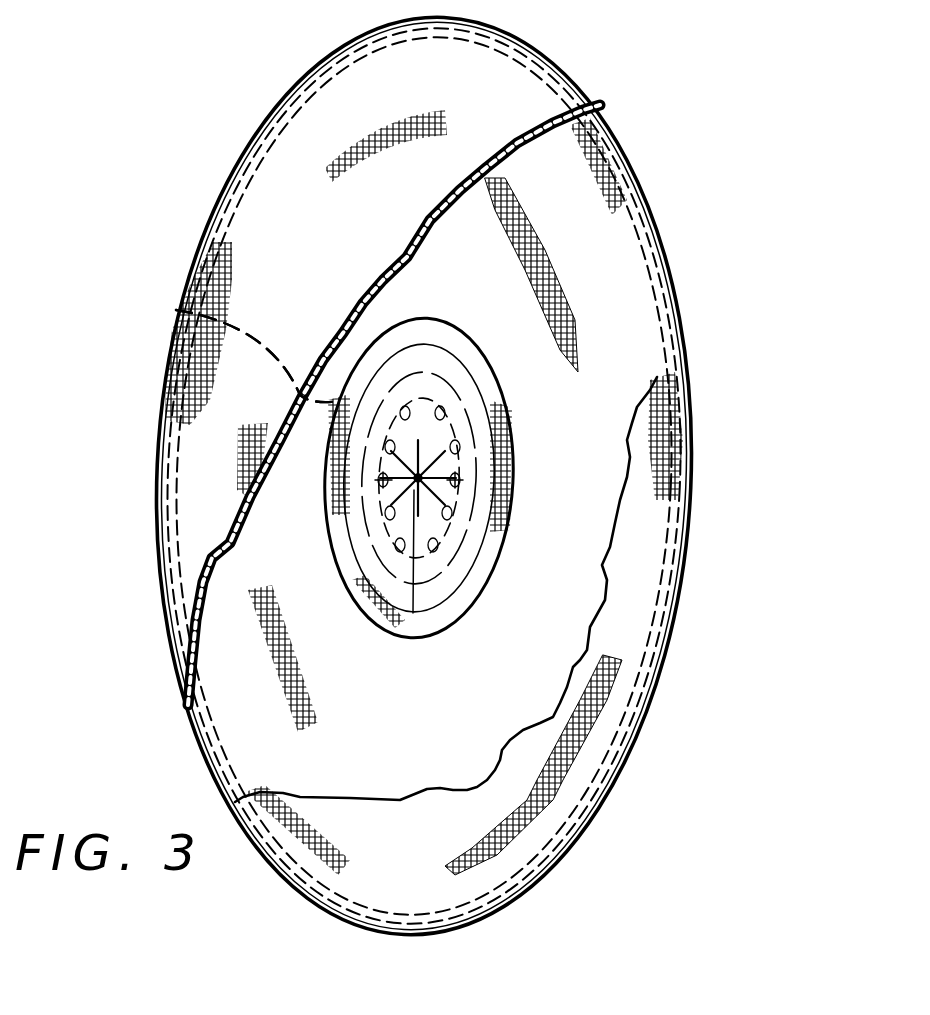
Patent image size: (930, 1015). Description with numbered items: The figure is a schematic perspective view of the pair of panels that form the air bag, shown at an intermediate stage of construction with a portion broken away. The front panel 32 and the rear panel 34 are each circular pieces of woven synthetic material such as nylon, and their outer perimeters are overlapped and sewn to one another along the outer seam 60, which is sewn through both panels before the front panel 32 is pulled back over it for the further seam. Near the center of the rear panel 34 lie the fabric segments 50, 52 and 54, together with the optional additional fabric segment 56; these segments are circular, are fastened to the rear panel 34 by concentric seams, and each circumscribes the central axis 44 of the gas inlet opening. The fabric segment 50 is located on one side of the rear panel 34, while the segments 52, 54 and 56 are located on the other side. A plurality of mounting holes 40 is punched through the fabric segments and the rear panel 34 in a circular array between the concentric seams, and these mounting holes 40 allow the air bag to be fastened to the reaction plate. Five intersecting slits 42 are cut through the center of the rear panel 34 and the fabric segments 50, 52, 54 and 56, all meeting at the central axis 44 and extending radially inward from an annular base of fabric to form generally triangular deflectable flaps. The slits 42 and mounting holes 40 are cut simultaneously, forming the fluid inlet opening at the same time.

The outer seam 60 is at (306, 90).
The front panel 32 is at (486, 98).
The rear panel 34 is at (622, 282).
The additional fabric segment 56 is at (484, 372).
The fabric segment 52 is at (178, 311).
The fabric segment 54 is at (178, 311).
The fabric segment 50 is at (516, 480).
The mounting holes 40 is at (460, 528).
The central axis 44 is at (408, 478).
The intersecting slits 42 is at (418, 465).